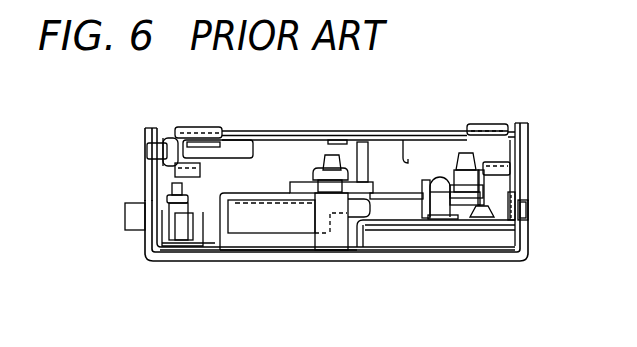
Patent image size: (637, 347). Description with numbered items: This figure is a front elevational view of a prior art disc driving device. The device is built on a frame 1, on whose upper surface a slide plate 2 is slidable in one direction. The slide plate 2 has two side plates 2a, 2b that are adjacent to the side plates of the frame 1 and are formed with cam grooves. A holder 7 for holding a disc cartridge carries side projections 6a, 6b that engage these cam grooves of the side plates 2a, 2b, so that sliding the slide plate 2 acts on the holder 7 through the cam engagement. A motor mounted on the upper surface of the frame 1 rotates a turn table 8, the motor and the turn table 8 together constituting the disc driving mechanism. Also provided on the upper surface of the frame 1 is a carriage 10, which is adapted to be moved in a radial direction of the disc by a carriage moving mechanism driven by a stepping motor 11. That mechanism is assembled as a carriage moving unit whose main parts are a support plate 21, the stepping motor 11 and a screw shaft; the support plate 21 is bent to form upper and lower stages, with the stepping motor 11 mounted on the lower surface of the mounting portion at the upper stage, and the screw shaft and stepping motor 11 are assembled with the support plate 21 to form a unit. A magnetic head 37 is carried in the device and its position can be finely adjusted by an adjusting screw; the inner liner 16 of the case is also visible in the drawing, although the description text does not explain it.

The frame 1 is at (528, 190).
The slide plate 2 is at (165, 262).
The side plate of the slide plate 2a is at (158, 127).
The side plate of the slide plate 2b is at (516, 122).
The side projection 6a is at (146, 154).
The side projection 6b is at (525, 143).
The holder 7 is at (250, 131).
The turn table 8 is at (298, 182).
The carriage 10 is at (298, 223).
The stepping motor 11 is at (445, 247).
The inner liner 16 is at (238, 261).
The support plate 21 is at (342, 252).
The magnetic head 37 is at (435, 177).